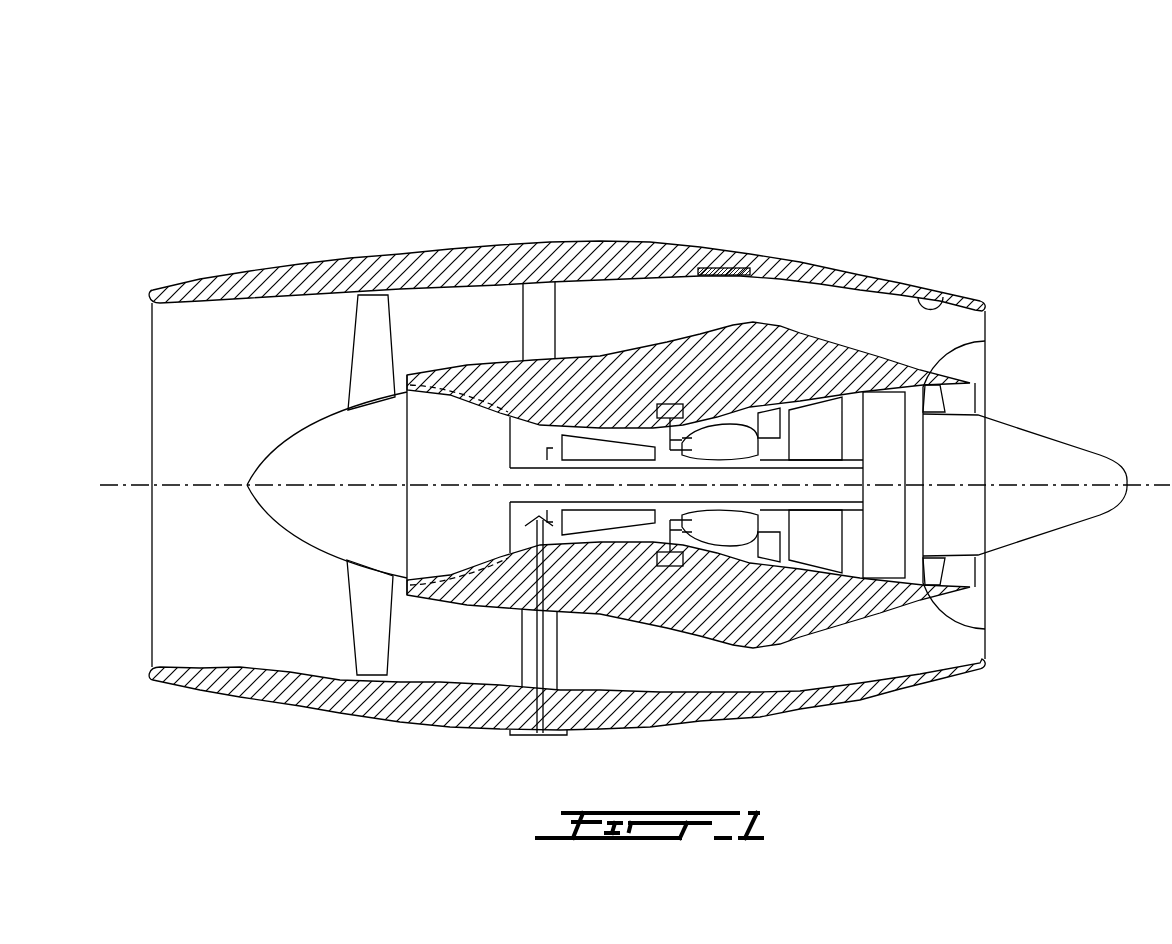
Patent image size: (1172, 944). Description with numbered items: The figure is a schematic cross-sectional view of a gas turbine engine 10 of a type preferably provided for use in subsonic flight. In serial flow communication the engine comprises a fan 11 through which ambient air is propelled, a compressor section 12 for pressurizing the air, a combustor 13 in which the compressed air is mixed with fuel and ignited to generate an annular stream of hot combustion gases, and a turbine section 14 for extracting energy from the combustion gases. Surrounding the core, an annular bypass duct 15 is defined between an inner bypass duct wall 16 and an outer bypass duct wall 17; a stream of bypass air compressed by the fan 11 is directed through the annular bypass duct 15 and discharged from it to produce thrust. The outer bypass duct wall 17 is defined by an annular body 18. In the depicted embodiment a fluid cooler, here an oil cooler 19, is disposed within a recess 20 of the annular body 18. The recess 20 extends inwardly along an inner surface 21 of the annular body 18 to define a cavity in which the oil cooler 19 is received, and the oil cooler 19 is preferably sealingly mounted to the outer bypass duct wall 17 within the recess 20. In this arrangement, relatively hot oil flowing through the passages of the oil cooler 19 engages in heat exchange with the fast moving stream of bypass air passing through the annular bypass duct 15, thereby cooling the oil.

The gas turbine engine 10 is at (352, 153).
The fan 11 is at (353, 338).
The compressor section 12 is at (573, 448).
The combustor 13 is at (727, 437).
The turbine section 14 is at (812, 398).
The annular bypass duct 15 is at (808, 292).
The inner bypass duct wall 16 is at (985, 341).
The outer bypass duct wall 17 is at (893, 275).
The annular body 18 is at (617, 258).
The oil cooler 19 is at (712, 270).
The recess 20 is at (736, 269).
The inner surface 21 is at (957, 295).